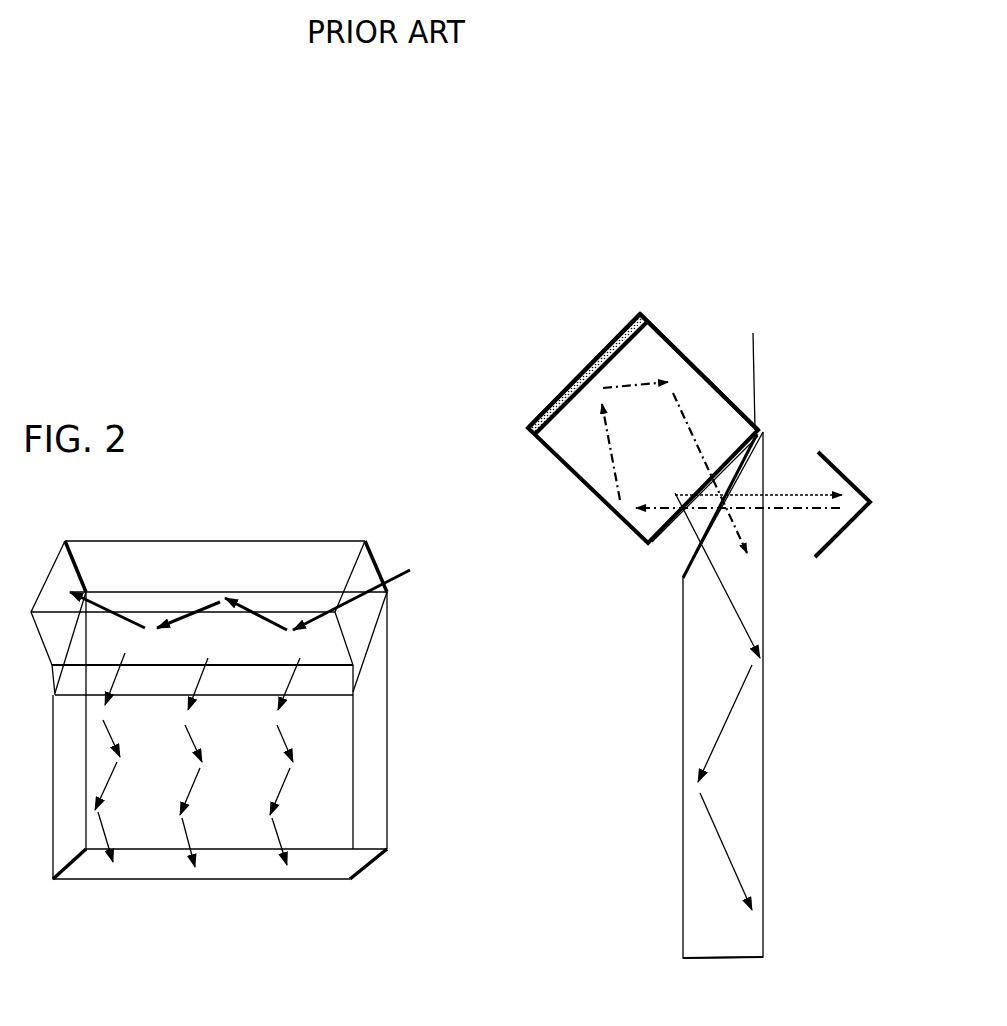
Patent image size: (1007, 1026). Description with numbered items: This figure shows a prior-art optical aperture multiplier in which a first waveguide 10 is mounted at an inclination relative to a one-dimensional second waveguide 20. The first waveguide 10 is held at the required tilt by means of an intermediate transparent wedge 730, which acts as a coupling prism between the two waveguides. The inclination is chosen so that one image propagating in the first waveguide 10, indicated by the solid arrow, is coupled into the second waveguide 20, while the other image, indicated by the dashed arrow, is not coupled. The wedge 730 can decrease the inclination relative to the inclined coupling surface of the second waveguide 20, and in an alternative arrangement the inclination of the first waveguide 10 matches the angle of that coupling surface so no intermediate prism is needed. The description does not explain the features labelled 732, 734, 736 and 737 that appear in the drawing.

The first waveguide 10 is at (436, 504).
The second waveguide 20 is at (679, 557).
The transparent wedge 730 is at (436, 636).
The light input surface 732 is at (760, 352).
The coupling interface 734 is at (760, 466).
The corner mirror / reflector 736 is at (844, 498).
The reflective coating 737 is at (548, 399).